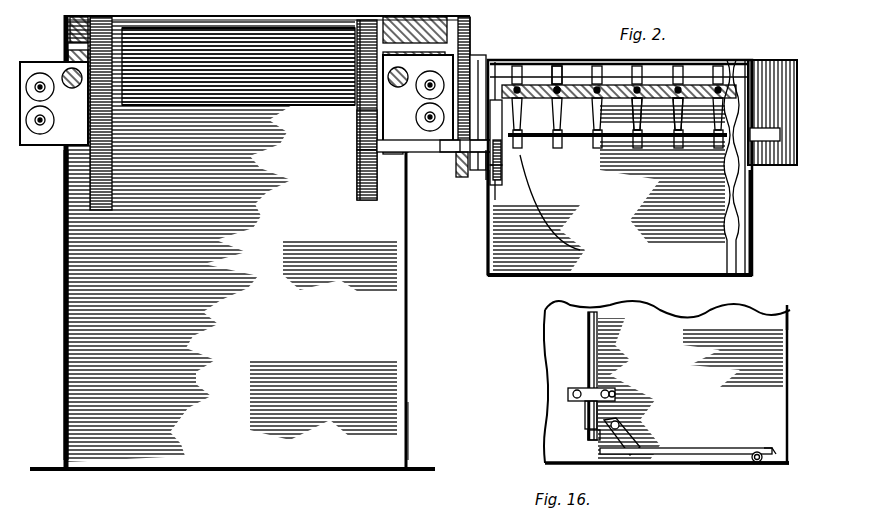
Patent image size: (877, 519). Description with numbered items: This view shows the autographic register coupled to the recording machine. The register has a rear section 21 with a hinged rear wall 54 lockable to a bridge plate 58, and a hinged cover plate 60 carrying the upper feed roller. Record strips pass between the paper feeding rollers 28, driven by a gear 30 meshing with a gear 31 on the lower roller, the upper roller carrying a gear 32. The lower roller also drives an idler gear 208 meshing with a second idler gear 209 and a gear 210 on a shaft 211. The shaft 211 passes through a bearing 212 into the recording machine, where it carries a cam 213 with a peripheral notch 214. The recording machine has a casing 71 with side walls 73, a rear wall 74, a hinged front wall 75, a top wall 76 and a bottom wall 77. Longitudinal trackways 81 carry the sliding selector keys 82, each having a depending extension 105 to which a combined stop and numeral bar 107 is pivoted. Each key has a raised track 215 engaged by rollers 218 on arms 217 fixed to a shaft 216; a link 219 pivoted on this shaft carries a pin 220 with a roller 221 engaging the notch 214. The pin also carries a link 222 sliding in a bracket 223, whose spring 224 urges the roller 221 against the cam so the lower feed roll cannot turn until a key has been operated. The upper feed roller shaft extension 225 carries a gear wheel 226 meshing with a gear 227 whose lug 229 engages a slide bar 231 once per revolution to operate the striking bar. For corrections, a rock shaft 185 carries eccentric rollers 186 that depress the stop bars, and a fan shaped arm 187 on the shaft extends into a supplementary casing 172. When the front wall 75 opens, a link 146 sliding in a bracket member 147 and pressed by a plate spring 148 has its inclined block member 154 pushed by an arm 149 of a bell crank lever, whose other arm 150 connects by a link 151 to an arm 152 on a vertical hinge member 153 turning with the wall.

In FIG. 2, the rear section 21 is at (408, 345).
In FIG. 2, the paper feeding rollers 28 is at (197, 78).
In FIG. 2, the gear 30 is at (66, 195).
In FIG. 2, the gear 31 is at (68, 58).
In FIG. 2, the gear 32 is at (214, 105).
In FIG. 2, the rear wall 54 is at (408, 400).
In FIG. 2, the bridge plate 58 is at (418, 102).
In FIG. 2, the cover plate 60 is at (72, 20).
In FIG. 2, the casing 71 is at (495, 280).
In FIG. 16, the casing 71 is at (545, 455).
In FIG. 2, the side walls 73 is at (488, 250).
In FIG. 16, the side walls 73 is at (788, 314).
In FIG. 2, the rear wall 74 is at (600, 276).
In FIG. 16, the hinged front wall 75 is at (735, 465).
In FIG. 2, the top wall 76 is at (755, 68).
In FIG. 2, the bottom wall 77 is at (690, 276).
In FIG. 2, the trackways 81 is at (700, 70).
In FIG. 2, the selector keys 82 is at (742, 66).
In FIG. 2, the extension 105 is at (502, 165).
In FIG. 2, the combined stop and numeral bar 107 is at (580, 155).
In FIG. 16, the link 146 is at (588, 338).
In FIG. 16, the bracket member 147 is at (590, 393).
In FIG. 16, the plate spring 148 is at (570, 393).
In FIG. 16, the arm 149 is at (590, 436).
In FIG. 16, the arm 150 is at (604, 448).
In FIG. 16, the link 151 is at (690, 447).
In FIG. 16, the arm 152 is at (763, 447).
In FIG. 16, the hinge member 153 is at (757, 462).
In FIG. 16, the inclined block member 154 is at (587, 413).
In FIG. 2, the supplementary casing 172 is at (732, 230).
In FIG. 2, the rock shaft 185 is at (650, 150).
In FIG. 2, the eccentric rollers 186 is at (692, 140).
In FIG. 2, the fan shaped arm 187 is at (725, 200).
In FIG. 2, the idler gear 208 is at (358, 105).
In FIG. 2, the second idler gear 209 is at (358, 132).
In FIG. 2, the gear 210 is at (378, 160).
In FIG. 2, the shaft 211 is at (400, 150).
In FIG. 2, the bearing 212 is at (400, 168).
In FIG. 2, the cam 213 is at (502, 180).
In FIG. 2, the notch 214 is at (482, 165).
In FIG. 2, the raised track 215 is at (537, 86).
In FIG. 2, the shaft 216 is at (735, 60).
In FIG. 2, the arms 217 is at (580, 76).
In FIG. 2, the rollers 218 is at (532, 80).
In FIG. 2, the link 219 is at (527, 76).
In FIG. 2, the pin 220 is at (470, 162).
In FIG. 2, the roller 221 is at (440, 152).
In FIG. 2, the link 222 is at (487, 172).
In FIG. 2, the bracket 223 is at (567, 205).
In FIG. 2, the spring 224 is at (505, 195).
In FIG. 2, the extension 225 is at (462, 30).
In FIG. 2, the gear wheel 226 is at (472, 55).
In FIG. 2, the gear 227 is at (476, 60).
In FIG. 2, the lug 229 is at (480, 90).
In FIG. 2, the slide bar 231 is at (462, 178).